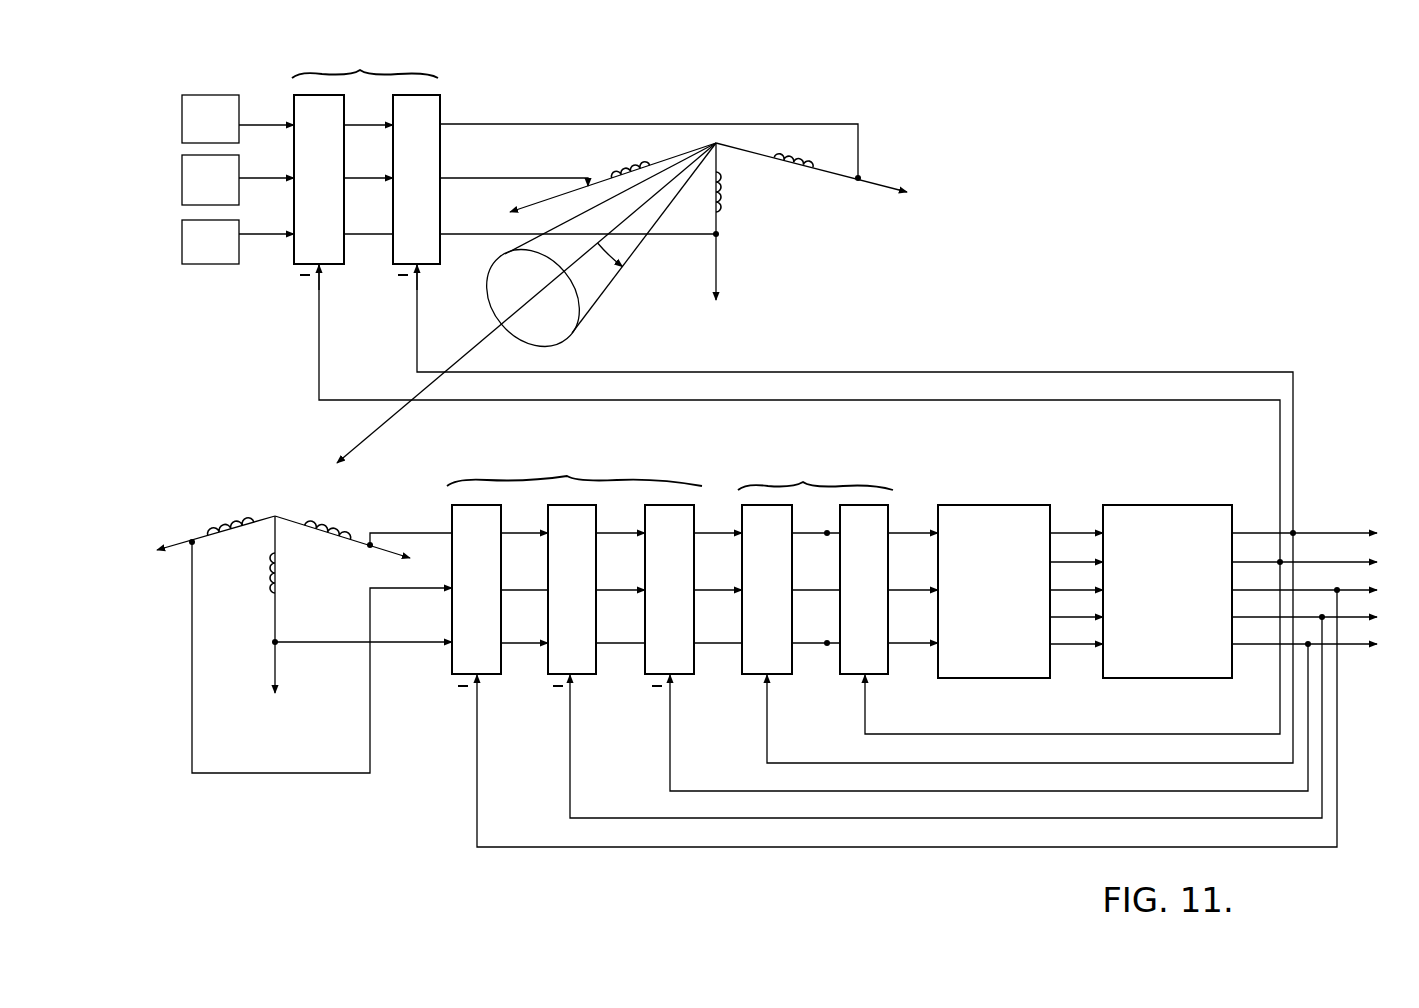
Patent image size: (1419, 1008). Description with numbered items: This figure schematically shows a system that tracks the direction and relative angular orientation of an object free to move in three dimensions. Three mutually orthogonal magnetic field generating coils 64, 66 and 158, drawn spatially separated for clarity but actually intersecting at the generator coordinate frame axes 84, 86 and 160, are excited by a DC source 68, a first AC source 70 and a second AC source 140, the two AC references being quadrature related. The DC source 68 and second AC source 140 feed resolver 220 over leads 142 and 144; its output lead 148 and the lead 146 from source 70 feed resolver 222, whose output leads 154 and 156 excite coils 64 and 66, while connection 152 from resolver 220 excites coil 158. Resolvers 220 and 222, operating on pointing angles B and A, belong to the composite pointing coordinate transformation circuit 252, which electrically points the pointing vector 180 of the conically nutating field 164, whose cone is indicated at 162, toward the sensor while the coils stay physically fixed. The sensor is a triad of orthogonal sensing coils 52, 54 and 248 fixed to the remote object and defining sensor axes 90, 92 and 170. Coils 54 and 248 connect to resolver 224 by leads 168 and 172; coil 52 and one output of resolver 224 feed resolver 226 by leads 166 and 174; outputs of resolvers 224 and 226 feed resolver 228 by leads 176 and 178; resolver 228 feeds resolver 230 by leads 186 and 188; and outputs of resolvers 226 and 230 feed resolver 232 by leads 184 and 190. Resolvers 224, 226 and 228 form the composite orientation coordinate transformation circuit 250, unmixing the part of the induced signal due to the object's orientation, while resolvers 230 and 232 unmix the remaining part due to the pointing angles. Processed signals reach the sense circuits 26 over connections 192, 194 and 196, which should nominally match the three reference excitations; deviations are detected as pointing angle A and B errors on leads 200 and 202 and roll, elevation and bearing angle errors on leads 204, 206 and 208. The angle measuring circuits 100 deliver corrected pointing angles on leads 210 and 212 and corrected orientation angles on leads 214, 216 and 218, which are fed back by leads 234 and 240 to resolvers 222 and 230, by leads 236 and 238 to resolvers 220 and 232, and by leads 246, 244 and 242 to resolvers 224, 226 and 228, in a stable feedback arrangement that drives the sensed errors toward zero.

The DC source 68 is at (182, 121).
The AC1 source 70 is at (182, 183).
The AC2 source 140 is at (182, 251).
The lead 142 is at (276, 124).
The output lead 146 is at (276, 178).
The lead 144 is at (276, 234).
The output lead 148 is at (378, 124).
The connection 152 is at (379, 233).
The resolver 220 is at (306, 153).
The resolver 222 is at (403, 153).
The composite pointing coordinate transformation circuit 252 is at (592, 269).
The output lead 154 is at (531, 124).
The output lead 156 is at (531, 180).
The third magnetic field generating coil 158 is at (704, 205).
The cartesian coordinate frame axis 160 is at (721, 274).
The magnetic field generating coil 66 is at (632, 164).
The magnetic field generating coil 64 is at (799, 158).
The cartesian coordinate frame axis 84 is at (884, 190).
The cartesian coordinate frame axis 86 is at (548, 206).
The cone half angle 162 is at (597, 273).
The conically nutating magnetic field 164 is at (539, 338).
The pointing vector 180 is at (362, 441).
The lead 234 is at (850, 371).
The lead 236 is at (850, 401).
The sensor coordinate axis 92 is at (178, 536).
The magnetic field sensing coil 54 is at (231, 518).
The magnetic field sensing coil 52 is at (321, 518).
The third magnetic field sensing coil 248 is at (268, 572).
The sensor coordinate axis 90 is at (392, 554).
The sensor coordinate axis 170 is at (278, 664).
The lead 166 is at (419, 530).
The lead 168 is at (402, 588).
The lead 172 is at (417, 643).
The resolver 224 is at (491, 504).
The resolver 226 is at (584, 504).
The resolver 228 is at (678, 504).
The resolver 230 is at (781, 506).
The resolver 232 is at (874, 506).
The composite orientation coordinate transformation circuit 250 is at (574, 466).
The lead 176 is at (535, 589).
The lead 174 is at (535, 642).
The lead 178 is at (634, 527).
The lead 184 is at (634, 639).
The lead 186 is at (729, 527).
The lead 188 is at (729, 584).
The lead 190 is at (812, 529).
The connection 192 is at (829, 585).
The connection 194 is at (907, 529).
The connection 196 is at (907, 639).
The sense circuits 26 is at (994, 502).
The angle measuring circuits 100 is at (1174, 504).
The lead 200 is at (1087, 531).
The lead 202 is at (1087, 562).
The lead 204 is at (1087, 589).
The lead 206 is at (1087, 617).
The lead 208 is at (1087, 643).
The lead 210 is at (1267, 531).
The lead 212 is at (1267, 560).
The lead 214 is at (1267, 588).
The lead 216 is at (1267, 615).
The lead 218 is at (1267, 642).
The lead 238 is at (1122, 733).
The lead 240 is at (1122, 763).
The lead 242 is at (1122, 790).
The lead 244 is at (1122, 818).
The lead 246 is at (1122, 846).